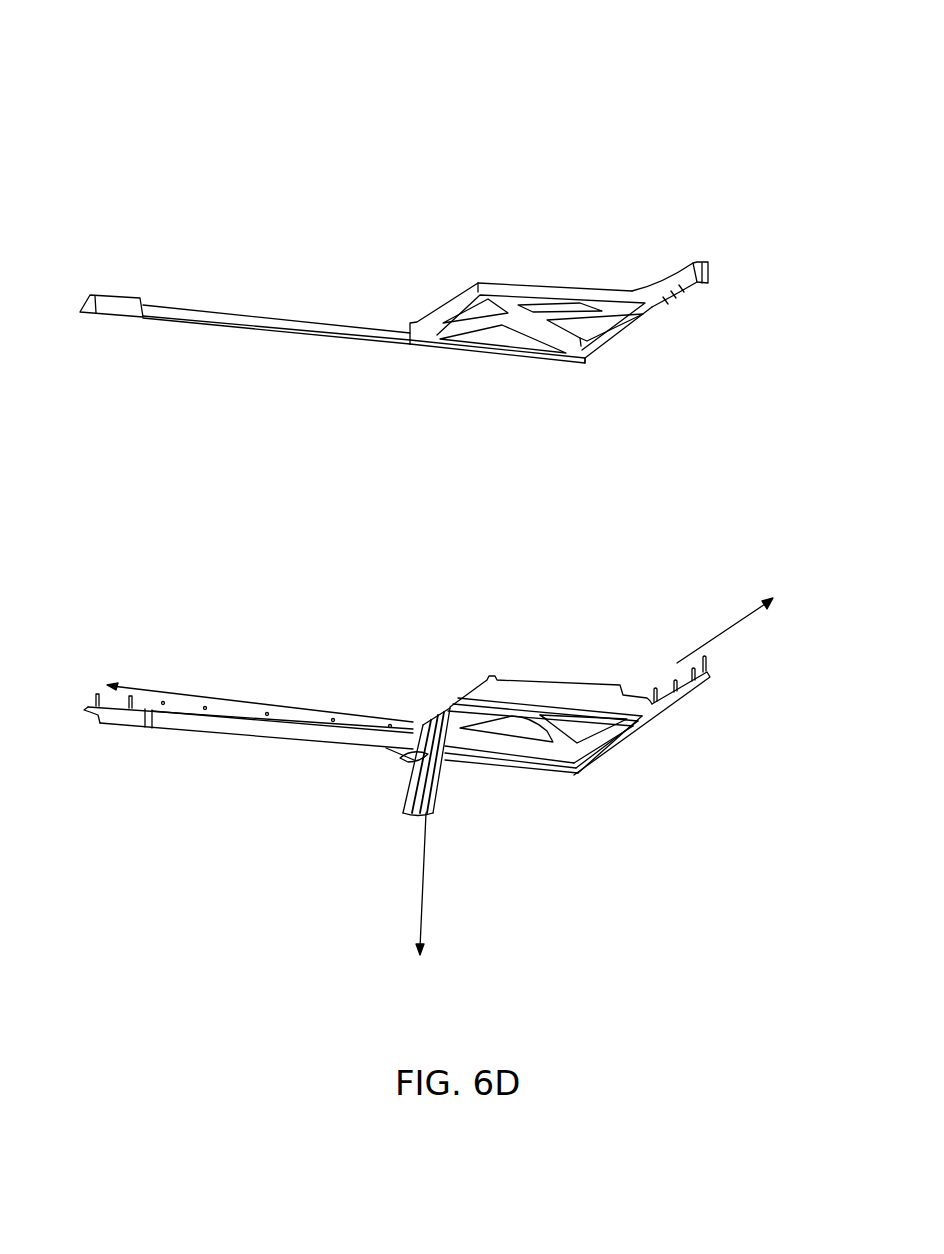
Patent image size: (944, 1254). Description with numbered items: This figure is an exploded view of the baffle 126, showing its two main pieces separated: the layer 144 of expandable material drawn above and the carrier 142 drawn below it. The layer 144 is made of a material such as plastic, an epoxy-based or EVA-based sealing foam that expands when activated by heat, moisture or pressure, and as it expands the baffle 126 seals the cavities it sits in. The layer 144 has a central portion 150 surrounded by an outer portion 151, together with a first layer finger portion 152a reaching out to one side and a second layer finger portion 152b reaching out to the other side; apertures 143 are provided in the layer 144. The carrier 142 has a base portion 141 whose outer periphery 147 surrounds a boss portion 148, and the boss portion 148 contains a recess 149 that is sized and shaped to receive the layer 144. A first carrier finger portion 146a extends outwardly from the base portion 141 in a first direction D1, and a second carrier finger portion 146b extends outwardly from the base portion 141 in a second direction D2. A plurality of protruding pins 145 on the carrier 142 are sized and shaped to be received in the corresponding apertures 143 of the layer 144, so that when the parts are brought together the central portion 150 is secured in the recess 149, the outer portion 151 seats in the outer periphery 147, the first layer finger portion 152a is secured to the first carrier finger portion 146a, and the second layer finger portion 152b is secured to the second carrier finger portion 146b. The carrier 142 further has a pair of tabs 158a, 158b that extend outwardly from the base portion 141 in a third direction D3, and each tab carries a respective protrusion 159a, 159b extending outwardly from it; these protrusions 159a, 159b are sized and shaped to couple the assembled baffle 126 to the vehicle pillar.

The baffle 126 is at (525, 63).
The base portion 141 is at (538, 742).
The carrier 142 is at (600, 727).
The apertures 143 is at (676, 308).
The layer of expandable material 144 is at (496, 286).
The protruding pins 145 is at (708, 661).
The first carrier finger portion 146a is at (255, 733).
The second carrier finger portion 146b is at (690, 690).
The outer periphery 147 is at (657, 690).
The boss portion 148 is at (503, 728).
The recess 149 is at (539, 715).
The central portion 150 is at (530, 318).
The outer portion 151 is at (584, 356).
The first layer finger portion 152a is at (122, 306).
The second layer finger portion 152b is at (708, 271).
The tab 158a is at (418, 758).
The tab 158b is at (443, 810).
The protrusion 159a is at (400, 752).
The protrusion 159b is at (410, 813).
The first direction D1 is at (260, 700).
The second direction D2 is at (725, 630).
The third direction D3 is at (432, 884).